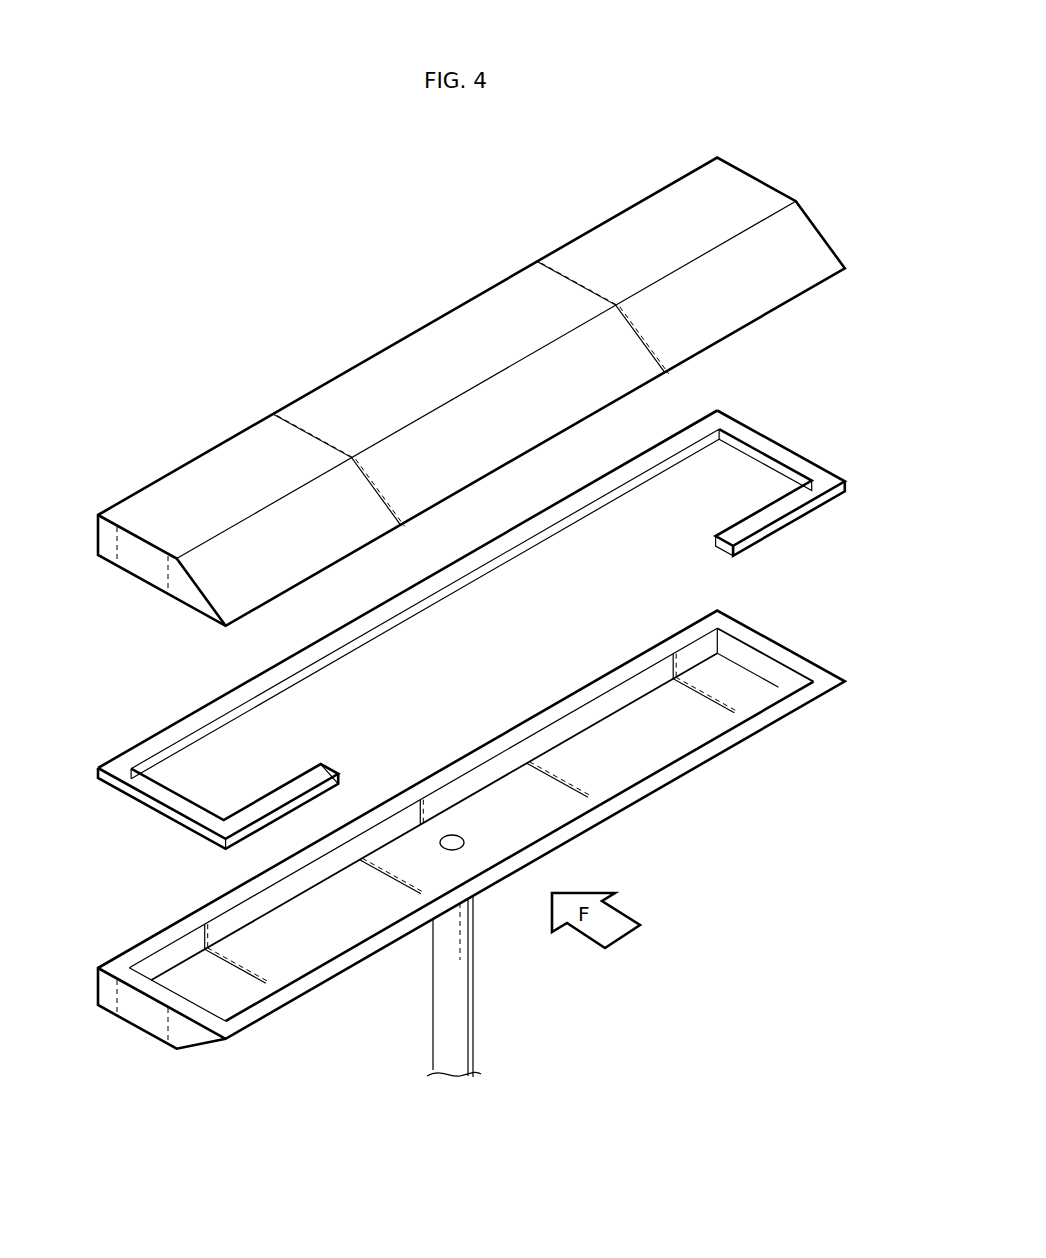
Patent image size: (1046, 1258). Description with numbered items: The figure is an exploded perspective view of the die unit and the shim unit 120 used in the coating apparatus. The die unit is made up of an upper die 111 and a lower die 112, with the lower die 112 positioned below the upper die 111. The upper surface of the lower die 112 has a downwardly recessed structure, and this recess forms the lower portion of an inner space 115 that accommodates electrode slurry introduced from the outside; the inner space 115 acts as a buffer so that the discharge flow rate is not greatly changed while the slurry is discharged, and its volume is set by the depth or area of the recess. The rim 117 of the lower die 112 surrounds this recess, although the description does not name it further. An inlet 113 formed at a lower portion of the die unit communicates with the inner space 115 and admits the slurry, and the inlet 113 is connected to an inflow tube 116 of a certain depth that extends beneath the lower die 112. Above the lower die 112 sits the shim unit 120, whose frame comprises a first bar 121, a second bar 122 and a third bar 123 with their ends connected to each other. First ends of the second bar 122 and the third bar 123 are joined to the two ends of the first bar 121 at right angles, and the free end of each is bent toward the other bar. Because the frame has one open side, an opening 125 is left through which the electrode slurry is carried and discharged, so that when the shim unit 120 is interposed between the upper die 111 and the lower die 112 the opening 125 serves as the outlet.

The upper die 111 is at (397, 362).
The lower die 112 is at (461, 826).
The inlet 113 is at (453, 835).
The inner space 115 is at (235, 955).
The inflow tube 116 is at (443, 992).
The rim flange 117 is at (152, 945).
The shim unit 120 is at (466, 623).
The first bar 121 is at (233, 698).
The second bar 122 is at (170, 800).
The third bar 123 is at (780, 455).
The opening 125 is at (614, 622).